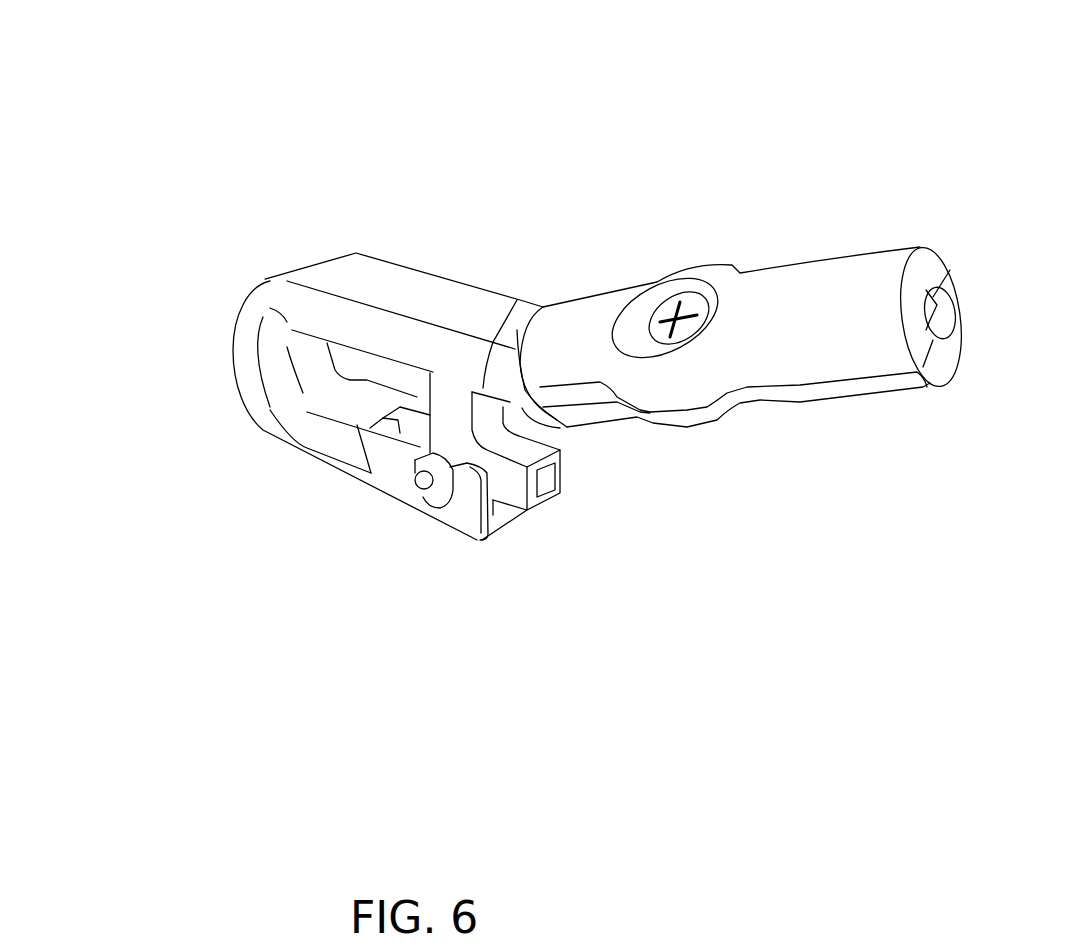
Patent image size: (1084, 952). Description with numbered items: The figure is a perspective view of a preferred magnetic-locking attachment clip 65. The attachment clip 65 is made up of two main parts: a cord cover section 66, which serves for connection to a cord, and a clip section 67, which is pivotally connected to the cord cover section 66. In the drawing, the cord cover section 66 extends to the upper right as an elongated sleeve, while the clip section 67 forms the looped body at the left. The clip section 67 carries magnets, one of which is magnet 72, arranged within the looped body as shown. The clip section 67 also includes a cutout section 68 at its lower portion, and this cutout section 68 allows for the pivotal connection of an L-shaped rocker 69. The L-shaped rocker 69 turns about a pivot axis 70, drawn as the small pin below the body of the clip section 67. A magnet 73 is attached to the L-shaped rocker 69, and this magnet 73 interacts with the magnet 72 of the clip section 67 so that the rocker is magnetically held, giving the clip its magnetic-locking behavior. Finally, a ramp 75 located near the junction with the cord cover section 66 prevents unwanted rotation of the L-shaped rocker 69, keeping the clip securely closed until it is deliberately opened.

The magnetic-locking attachment clip 65 is at (285, 550).
The cord cover section 66 is at (875, 248).
The clip section 67 is at (283, 265).
The cutout section 68 is at (500, 510).
The L-shaped rocker 69 is at (560, 450).
The pivot axis 70 is at (420, 486).
The magnet 72 is at (300, 392).
The magnet 73 is at (550, 487).
The ramp 75 is at (480, 392).